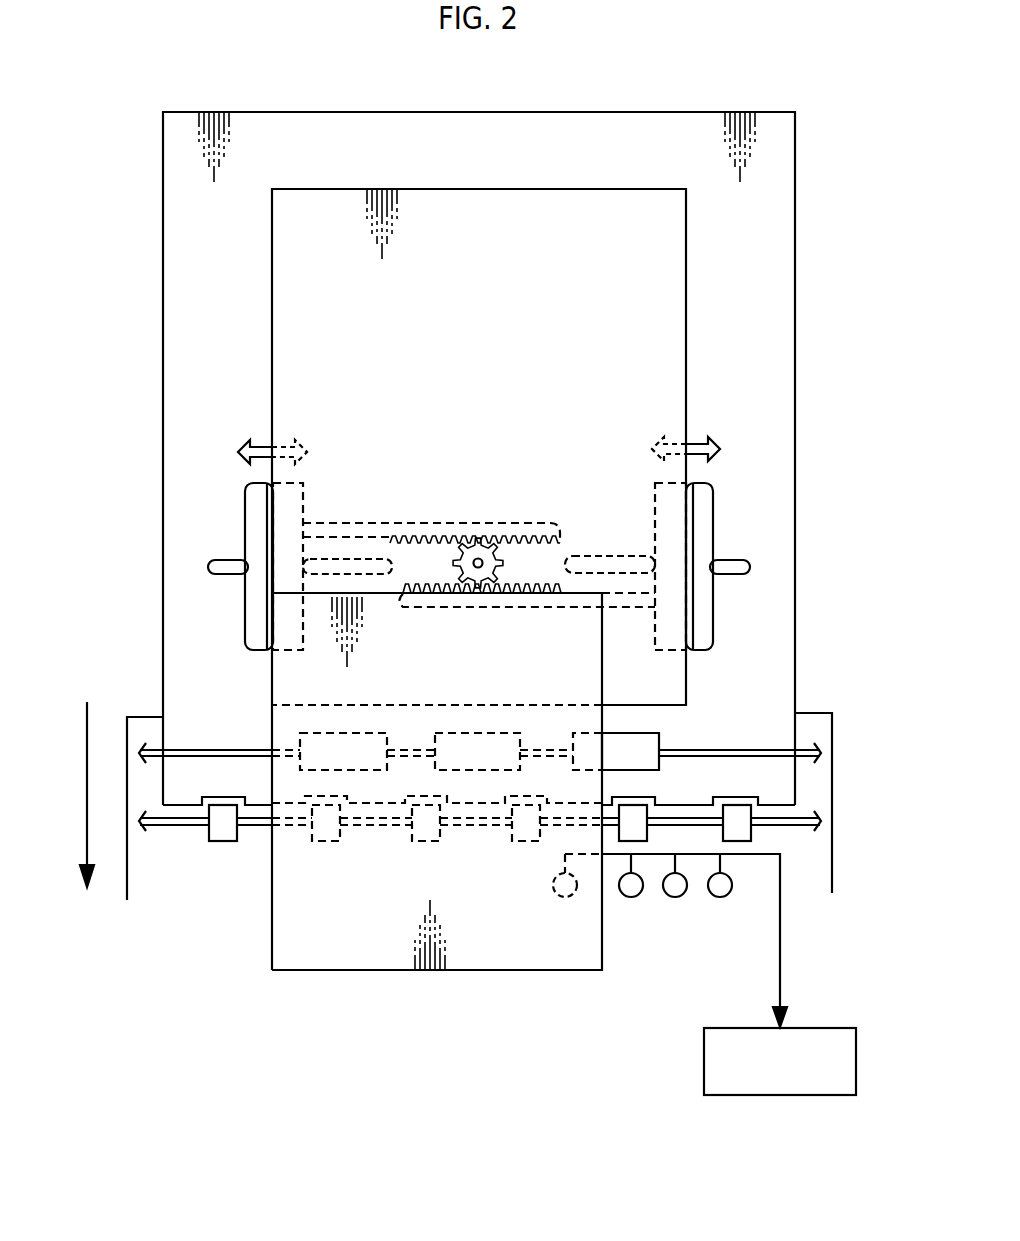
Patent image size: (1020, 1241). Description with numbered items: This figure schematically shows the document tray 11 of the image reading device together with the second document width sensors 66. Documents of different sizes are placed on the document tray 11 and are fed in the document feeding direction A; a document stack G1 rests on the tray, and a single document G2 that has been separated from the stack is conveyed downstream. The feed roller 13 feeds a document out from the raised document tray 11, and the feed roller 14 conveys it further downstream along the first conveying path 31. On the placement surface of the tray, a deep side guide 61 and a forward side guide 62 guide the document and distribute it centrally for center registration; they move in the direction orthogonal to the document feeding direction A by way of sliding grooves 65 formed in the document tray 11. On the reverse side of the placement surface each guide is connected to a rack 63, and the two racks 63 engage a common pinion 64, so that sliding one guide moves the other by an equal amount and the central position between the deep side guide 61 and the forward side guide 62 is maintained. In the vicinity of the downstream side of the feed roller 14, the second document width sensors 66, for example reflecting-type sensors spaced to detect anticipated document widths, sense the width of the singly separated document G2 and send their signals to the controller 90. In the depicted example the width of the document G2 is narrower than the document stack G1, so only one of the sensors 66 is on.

The document tray 11 is at (776, 348).
The feed roller 13 is at (640, 733).
The feed roller 14 is at (218, 835).
The first conveying path 31 is at (815, 870).
The deep side guide 61 is at (258, 510).
The forward side guide 62 is at (700, 508).
The rack 63 is at (355, 527).
The pinion 64 is at (496, 562).
The sliding groove 65 is at (230, 572).
The second document width sensor 66 is at (552, 902).
The controller 90 is at (782, 1096).
The document stack G1 is at (667, 245).
The document G2 is at (290, 940).
The document feeding direction A is at (85, 784).